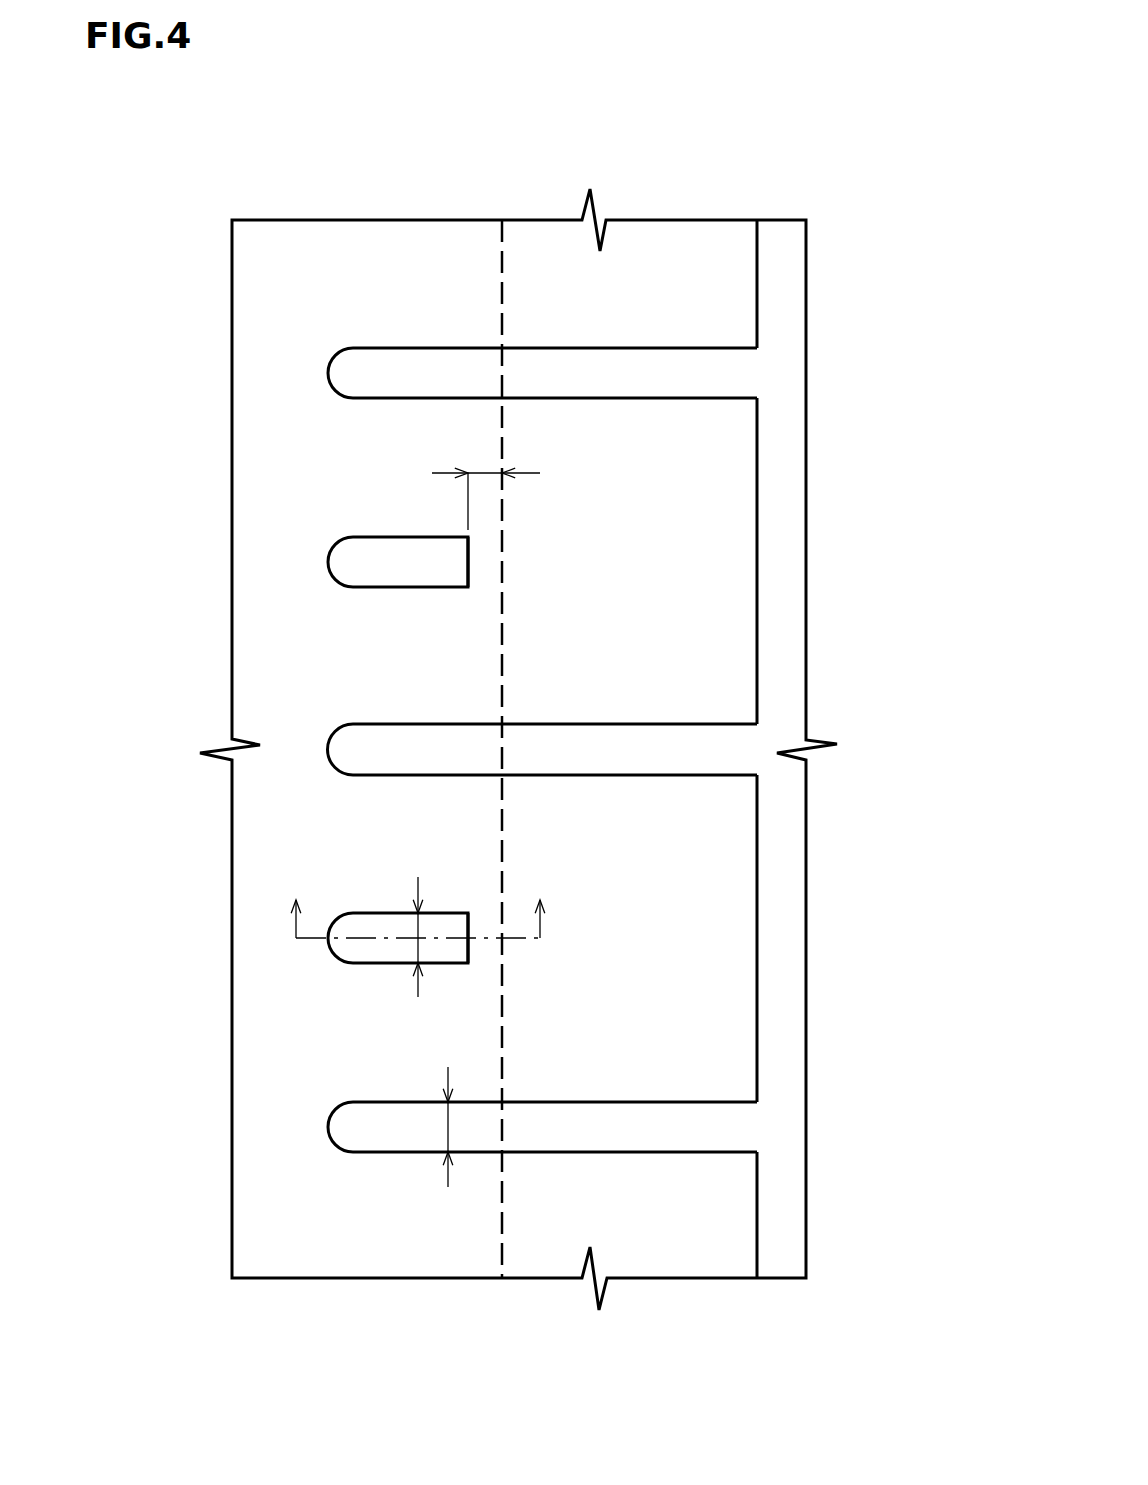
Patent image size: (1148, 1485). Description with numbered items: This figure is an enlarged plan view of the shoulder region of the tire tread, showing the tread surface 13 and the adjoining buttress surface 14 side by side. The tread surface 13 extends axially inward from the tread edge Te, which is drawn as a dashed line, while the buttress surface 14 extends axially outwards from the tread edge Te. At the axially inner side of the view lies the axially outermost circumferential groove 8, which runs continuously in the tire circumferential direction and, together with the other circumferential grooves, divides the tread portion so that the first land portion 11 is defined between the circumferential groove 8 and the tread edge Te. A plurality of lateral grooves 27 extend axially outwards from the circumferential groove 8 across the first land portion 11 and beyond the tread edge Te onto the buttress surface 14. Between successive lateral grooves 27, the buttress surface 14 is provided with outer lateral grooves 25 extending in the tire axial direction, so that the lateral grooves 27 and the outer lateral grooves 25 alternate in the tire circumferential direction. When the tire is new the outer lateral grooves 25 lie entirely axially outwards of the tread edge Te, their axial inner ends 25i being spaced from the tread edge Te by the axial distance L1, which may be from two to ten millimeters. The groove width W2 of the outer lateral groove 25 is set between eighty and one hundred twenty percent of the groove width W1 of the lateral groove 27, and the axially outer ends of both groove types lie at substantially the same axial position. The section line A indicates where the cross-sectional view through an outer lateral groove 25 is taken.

The circumferential groove 8 is at (783, 280).
The first land portion 11 is at (656, 275).
The tread surface 13 is at (663, 657).
The buttress surface 14 is at (305, 673).
The outer lateral groove 25 is at (358, 568).
The axial inner end of outer lateral groove 25i is at (468, 561).
The lateral groove 27 is at (643, 370).
The tread edge Te is at (502, 291).
The axial distance L1 is at (488, 473).
The groove width of lateral groove W1 is at (448, 1127).
The groove width of outer lateral groove W2 is at (418, 943).
The section line A- A is at (417, 905).